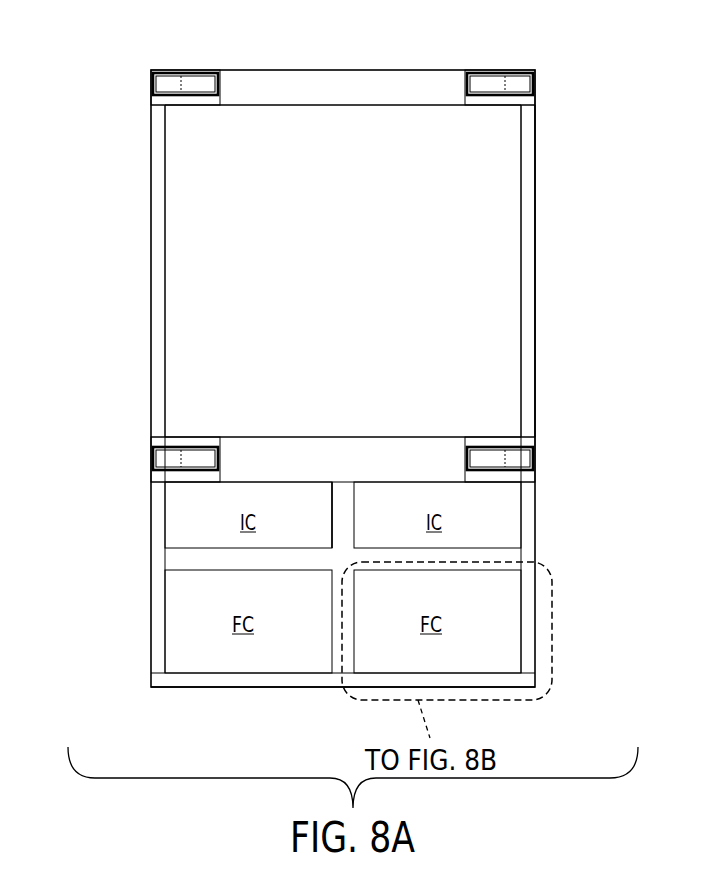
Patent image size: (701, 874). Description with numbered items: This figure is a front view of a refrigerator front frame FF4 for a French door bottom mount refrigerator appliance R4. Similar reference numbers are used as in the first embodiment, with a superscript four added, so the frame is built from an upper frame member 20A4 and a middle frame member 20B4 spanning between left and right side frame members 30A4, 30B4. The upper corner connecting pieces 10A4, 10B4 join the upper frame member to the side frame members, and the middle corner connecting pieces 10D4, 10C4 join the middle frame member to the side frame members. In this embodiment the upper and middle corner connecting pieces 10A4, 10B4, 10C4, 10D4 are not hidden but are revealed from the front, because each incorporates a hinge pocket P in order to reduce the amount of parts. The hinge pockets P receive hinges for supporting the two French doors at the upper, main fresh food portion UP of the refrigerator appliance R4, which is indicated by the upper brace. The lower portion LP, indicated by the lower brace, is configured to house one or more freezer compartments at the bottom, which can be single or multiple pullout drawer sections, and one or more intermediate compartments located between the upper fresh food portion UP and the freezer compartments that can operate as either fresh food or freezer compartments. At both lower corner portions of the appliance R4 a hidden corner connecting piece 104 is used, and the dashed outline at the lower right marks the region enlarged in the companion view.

The hinge pocket P is at (172, 82).
The upper corner connecting piece 10A4 is at (189, 106).
The upper corner connecting piece 10B4 is at (472, 108).
The middle corner connecting piece 10C4 is at (485, 437).
The middle corner connecting piece 10D4 is at (190, 437).
The upper frame member 20A4 is at (285, 82).
The middle frame member 20B4 is at (283, 458).
The side frame member 30A4 is at (158, 315).
The side frame member 30B4 is at (527, 313).
The French door bottom mount refrigerator appliance R4 is at (340, 262).
The refrigerator front frame FF4 is at (556, 263).
The hidden corner connecting piece 104 is at (545, 712).
The upper, main fresh food portion UP is at (110, 69).
The lower portion LP is at (110, 470).